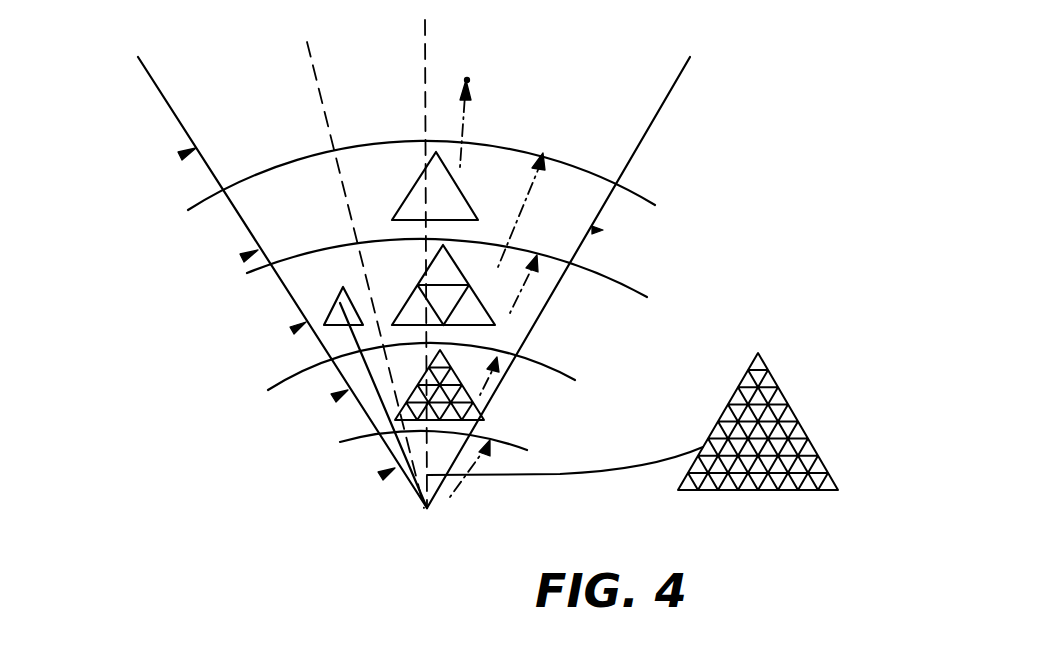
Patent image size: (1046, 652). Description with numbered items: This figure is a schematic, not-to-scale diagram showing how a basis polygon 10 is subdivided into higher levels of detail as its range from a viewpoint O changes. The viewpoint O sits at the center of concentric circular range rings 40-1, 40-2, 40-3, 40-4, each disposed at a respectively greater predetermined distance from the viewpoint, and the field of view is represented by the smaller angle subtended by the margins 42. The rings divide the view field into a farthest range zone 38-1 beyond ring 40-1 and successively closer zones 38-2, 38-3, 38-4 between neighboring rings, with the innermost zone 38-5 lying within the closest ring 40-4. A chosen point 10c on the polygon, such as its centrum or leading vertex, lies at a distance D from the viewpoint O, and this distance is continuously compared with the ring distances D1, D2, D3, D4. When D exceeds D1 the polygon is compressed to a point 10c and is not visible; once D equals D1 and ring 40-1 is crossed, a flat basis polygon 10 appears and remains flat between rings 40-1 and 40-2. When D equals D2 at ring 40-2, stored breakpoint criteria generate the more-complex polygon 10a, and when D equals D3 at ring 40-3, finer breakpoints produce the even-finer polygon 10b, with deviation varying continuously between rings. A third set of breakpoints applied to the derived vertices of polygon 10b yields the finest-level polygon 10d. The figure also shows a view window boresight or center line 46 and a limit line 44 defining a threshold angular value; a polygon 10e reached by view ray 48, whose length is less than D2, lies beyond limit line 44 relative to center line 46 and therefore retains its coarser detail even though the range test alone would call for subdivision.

The basis polygon 10 is at (462, 190).
The more-complex LOD polygon 10a is at (410, 295).
The even-finer detailed polygon 10b is at (416, 383).
The chosen point on the basis polygon 10c is at (467, 80).
The finest-LOD polygon 10d is at (720, 418).
The polygon beyond the angular limit 10e is at (340, 286).
The farthest range zone 38-1 is at (182, 156).
The range zone 38-2 is at (244, 258).
The range zone 38-3 is at (294, 330).
The range zone 38-4 is at (336, 398).
The range zone 38-5 is at (383, 476).
The first range circle 40-1 is at (642, 192).
The second range circle 40-2 is at (610, 270).
The third range circle 40-3 is at (558, 363).
The fourth range circle 40-4 is at (525, 450).
The margins of the field of view 42 is at (156, 86).
The limit line 44 is at (307, 42).
The FOV center line 46 is at (427, 30).
The view ray 48 is at (370, 405).
The viewpoint O is at (428, 508).
The distance D is at (475, 123).
The distance to first range circle D1 is at (517, 218).
The distance to second range circle D2 is at (530, 277).
The distance to third range circle D3 is at (497, 380).
The distance to fourth range circle D4 is at (478, 456).